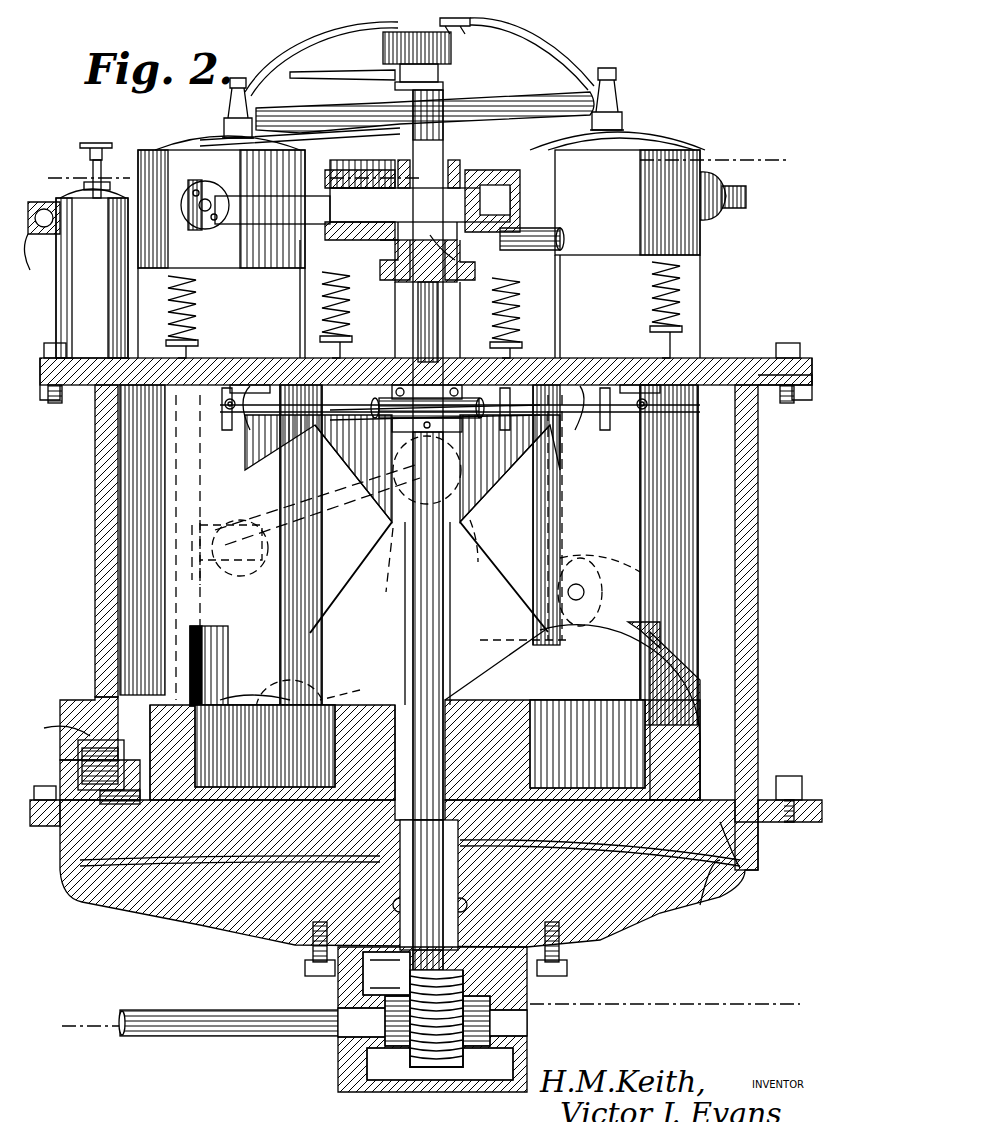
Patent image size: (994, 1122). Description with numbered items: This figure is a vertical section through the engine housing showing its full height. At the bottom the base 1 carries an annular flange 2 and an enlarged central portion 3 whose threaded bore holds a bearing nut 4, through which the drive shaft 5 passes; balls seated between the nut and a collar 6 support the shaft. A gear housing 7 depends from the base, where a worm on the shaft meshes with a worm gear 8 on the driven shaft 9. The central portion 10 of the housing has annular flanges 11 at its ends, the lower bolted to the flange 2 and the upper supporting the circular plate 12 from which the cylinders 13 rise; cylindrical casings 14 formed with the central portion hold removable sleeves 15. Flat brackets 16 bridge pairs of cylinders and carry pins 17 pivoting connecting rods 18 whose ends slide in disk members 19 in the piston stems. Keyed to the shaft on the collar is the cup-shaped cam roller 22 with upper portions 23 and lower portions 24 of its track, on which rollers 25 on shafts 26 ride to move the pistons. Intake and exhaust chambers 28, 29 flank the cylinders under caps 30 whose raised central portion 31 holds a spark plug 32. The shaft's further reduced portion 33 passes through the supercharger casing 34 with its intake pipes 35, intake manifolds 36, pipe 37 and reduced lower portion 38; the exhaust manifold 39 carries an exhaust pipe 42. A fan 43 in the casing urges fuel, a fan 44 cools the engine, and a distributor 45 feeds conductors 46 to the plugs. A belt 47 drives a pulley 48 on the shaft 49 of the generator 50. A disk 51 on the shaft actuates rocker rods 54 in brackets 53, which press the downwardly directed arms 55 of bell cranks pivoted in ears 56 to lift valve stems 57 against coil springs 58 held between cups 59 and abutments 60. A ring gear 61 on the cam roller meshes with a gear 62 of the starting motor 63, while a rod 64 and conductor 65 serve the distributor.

The base 1 is at (680, 900).
The annular flange 2 is at (800, 812).
The enlarged central portion 3 is at (42, 170).
The bearing nut 4 is at (40, 370).
The drive shaft 5 is at (76, 1020).
The collar 6 is at (492, 800).
The gear housing 7 is at (392, 1094).
The worm gear 8 is at (448, 1070).
The driven shaft 9 is at (640, 416).
The central portion of the housing 10 is at (748, 606).
The annular flanges 11 is at (760, 395).
The circular plate 12 is at (700, 356).
The cylinders 13 is at (419, 299).
The cylindrical casings 14 is at (560, 550).
The sleeves 15 is at (250, 664).
The flat brackets 16 is at (340, 586).
The pins 17 is at (390, 536).
The connecting rods 18 is at (486, 492).
The disk members 19 is at (242, 586).
The cup-shaped cam roller 22 is at (500, 700).
The upper portions of cam track 23 is at (560, 632).
The lower portions of cam track 24 is at (300, 730).
The rollers 25 is at (588, 570).
The roller shafts 26 is at (588, 620).
The intake chambers 28 is at (168, 245).
The exhaust chambers 29 is at (348, 256).
The caps 30 is at (160, 166).
The raised central portion 31 is at (228, 132).
The spark plug 32 is at (228, 106).
The further reduced portion 33 is at (402, 258).
The supercharger casing 34 is at (450, 176).
The intake pipes 35 is at (372, 166).
The intake manifolds 36 is at (298, 170).
The pipe 37 is at (540, 252).
The reduced lower portion 38 is at (446, 262).
The exhaust manifold 39 is at (46, 234).
The exhaust pipe 42 is at (50, 258).
The fan 43 is at (520, 190).
The fan 44 is at (496, 105).
The distributor 45 is at (452, 56).
The conductors 46 is at (308, 55).
The belt 47 is at (282, 138).
The pulley 48 is at (100, 143).
The generator shaft 49 is at (94, 164).
The generator 50 is at (78, 292).
The disk 51 is at (386, 410).
The brackets 53 is at (600, 385).
The rocker rods 54 is at (346, 422).
The downwardly directed arms 55 is at (668, 405).
The ears 56 is at (672, 388).
The valve stems 57 is at (190, 350).
The coil springs 58 is at (196, 316).
The cups 59 is at (196, 338).
The abutments 60 is at (190, 274).
The ring gear 61 is at (738, 838).
The gear 62 is at (110, 820).
The motor 63 is at (112, 760).
The rod 64 is at (342, 74).
The conductor 65 is at (466, 30).